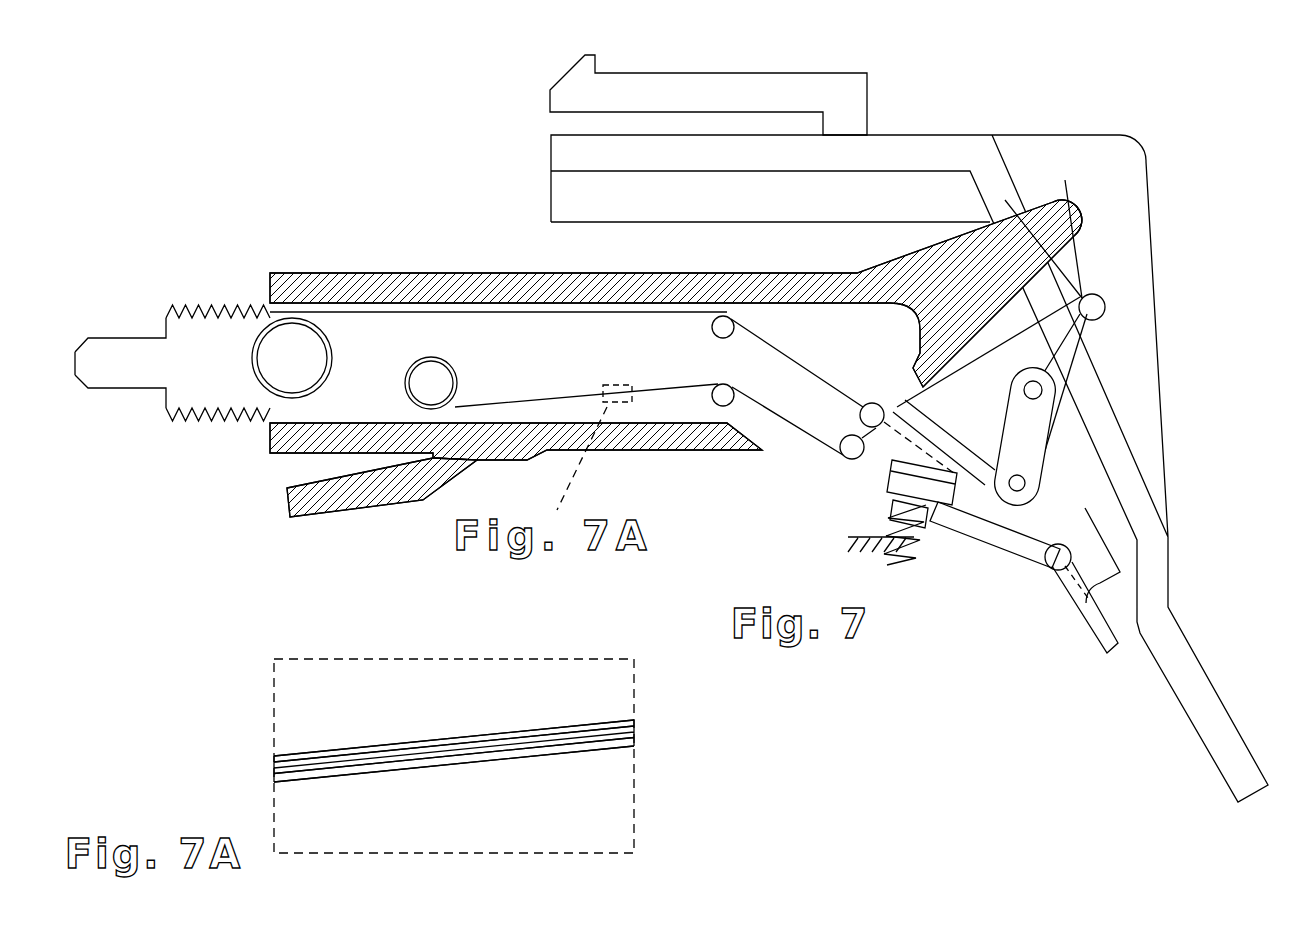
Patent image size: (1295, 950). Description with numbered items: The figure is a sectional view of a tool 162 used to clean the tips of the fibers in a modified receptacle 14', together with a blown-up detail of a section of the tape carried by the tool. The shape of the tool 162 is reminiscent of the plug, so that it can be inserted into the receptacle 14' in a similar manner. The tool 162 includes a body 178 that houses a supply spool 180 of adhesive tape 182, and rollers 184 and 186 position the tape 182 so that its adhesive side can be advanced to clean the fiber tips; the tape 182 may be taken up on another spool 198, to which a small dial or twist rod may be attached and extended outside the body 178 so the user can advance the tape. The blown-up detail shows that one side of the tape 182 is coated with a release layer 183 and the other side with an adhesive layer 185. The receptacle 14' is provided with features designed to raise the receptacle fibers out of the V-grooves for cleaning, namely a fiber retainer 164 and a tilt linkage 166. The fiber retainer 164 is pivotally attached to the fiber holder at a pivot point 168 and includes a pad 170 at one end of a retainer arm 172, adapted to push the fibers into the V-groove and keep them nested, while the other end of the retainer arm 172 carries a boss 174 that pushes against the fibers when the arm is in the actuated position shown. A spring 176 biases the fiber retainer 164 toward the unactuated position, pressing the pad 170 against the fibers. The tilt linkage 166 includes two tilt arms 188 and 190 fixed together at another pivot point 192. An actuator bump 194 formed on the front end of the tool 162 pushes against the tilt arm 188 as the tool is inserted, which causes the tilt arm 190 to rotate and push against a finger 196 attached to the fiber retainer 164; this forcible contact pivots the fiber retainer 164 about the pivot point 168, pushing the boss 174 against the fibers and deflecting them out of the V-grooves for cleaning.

In FIG. 7, the modified receptacle 14' is at (909, 409).
In FIG. 7, the tool 162 is at (262, 502).
In FIG. 7, the fiber retainer 164 is at (1024, 566).
In FIG. 7, the tilt linkage 166 is at (1072, 190).
In FIG. 7, the pivot point 168 is at (1027, 484).
In FIG. 7, the pad 170 is at (890, 470).
In FIG. 7, the retainer arm 172 is at (1018, 540).
In FIG. 7, the boss 174 is at (1050, 568).
In FIG. 7, the spring 176 is at (884, 526).
In FIG. 7, the body 178 is at (464, 268).
In FIG. 7, the supply spool 180 is at (250, 354).
In FIG. 7, the adhesive tape 182 is at (560, 320).
In FIG. 7A, the adhesive tape 182 is at (268, 767).
In FIG. 7A, the release layer 183 is at (527, 730).
In FIG. 7, the roller 184 is at (840, 440).
In FIG. 7A, the adhesive layer 185 is at (603, 748).
In FIG. 7, the roller 186 is at (876, 404).
In FIG. 7, the tilt arm 188 is at (1082, 252).
In FIG. 7, the tilt arm 190 is at (1055, 433).
In FIG. 7, the pivot point 192 is at (1104, 306).
In FIG. 7, the actuator bump 194 is at (1052, 213).
In FIG. 7, the finger 196 is at (1003, 424).
In FIG. 7, the take-up spool 198 is at (442, 378).